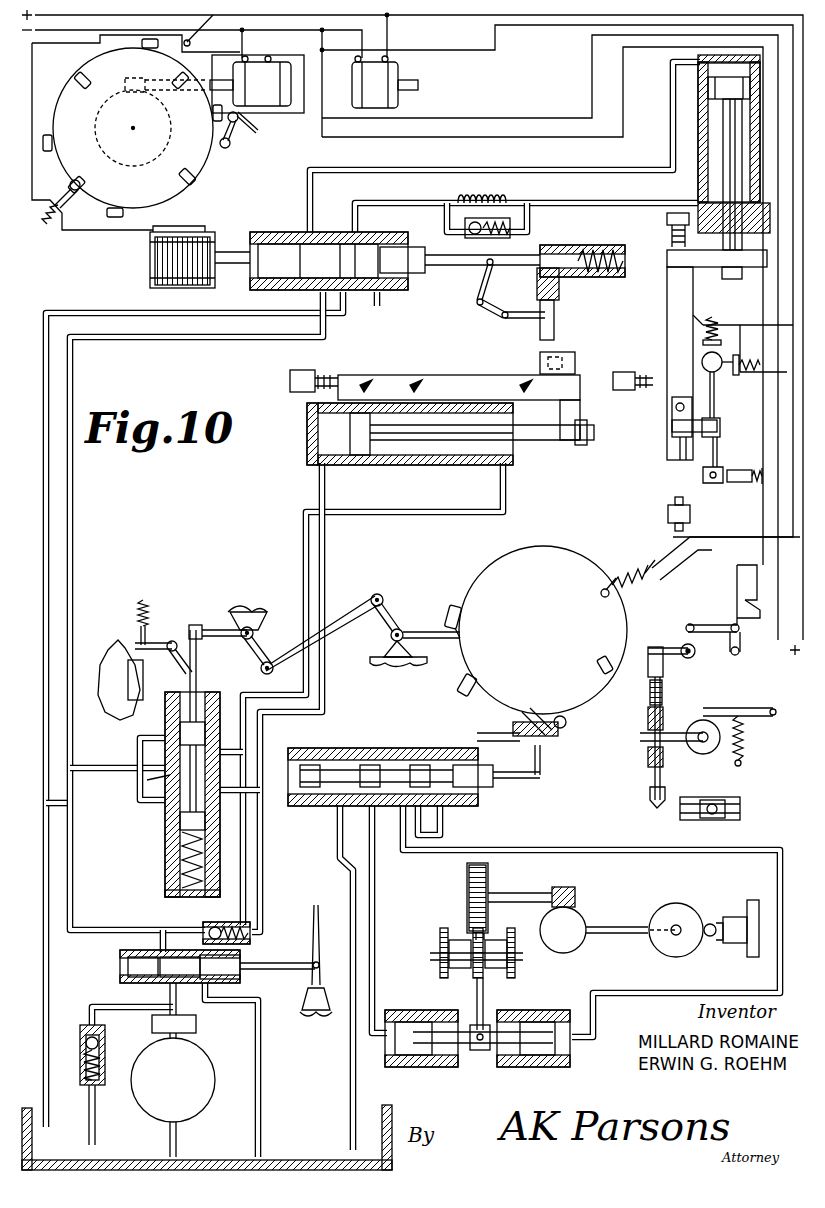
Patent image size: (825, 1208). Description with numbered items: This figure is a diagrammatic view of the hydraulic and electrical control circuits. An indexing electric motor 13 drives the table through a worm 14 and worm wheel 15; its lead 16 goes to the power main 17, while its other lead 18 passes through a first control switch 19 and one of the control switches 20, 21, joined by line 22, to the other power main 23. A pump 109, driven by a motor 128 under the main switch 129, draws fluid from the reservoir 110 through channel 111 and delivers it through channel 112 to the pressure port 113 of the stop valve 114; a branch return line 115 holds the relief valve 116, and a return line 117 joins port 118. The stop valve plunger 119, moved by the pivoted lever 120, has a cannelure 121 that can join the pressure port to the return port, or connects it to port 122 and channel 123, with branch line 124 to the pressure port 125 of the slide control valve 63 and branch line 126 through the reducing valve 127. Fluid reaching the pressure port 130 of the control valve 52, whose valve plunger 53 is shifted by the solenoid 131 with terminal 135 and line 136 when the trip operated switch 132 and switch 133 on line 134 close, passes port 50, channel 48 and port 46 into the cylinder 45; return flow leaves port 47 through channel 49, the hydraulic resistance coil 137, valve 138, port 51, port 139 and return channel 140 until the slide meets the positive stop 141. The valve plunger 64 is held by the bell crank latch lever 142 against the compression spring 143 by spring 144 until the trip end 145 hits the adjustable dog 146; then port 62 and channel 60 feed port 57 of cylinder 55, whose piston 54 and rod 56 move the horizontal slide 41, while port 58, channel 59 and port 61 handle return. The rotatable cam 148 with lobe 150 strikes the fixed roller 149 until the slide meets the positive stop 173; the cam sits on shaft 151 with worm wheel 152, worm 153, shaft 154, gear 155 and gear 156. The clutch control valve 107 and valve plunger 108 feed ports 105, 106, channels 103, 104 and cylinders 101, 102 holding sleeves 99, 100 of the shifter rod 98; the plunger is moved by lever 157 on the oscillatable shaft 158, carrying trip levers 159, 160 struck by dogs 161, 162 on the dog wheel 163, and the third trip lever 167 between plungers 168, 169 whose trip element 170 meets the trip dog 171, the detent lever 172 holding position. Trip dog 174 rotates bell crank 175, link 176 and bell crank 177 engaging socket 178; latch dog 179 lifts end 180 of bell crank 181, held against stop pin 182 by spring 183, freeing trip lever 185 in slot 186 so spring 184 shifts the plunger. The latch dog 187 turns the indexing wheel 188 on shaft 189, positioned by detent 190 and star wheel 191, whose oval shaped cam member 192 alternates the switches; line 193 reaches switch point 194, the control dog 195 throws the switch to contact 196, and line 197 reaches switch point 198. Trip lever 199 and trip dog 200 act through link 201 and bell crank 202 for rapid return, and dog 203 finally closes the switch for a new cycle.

The electric motor 13 is at (270, 56).
The worm 14 is at (130, 78).
The worm wheel 15 is at (108, 104).
The lead 16 is at (250, 56).
The power main 17 is at (136, 132).
The lead 18 is at (300, 82).
The first control switch 19 is at (233, 152).
The control switch 20 is at (703, 332).
The control switch 21 is at (722, 395).
The line 22 is at (748, 338).
The power main 23 is at (318, 20).
The horizontal slide 41 is at (418, 380).
The cylinder 45 is at (698, 148).
The port 46 is at (700, 68).
The port 47 is at (697, 200).
The channel 48 is at (580, 180).
The channel 49 is at (594, 206).
The port 50 is at (312, 232).
The port 51 is at (360, 232).
The control valve 52 is at (385, 300).
The valve plunger 53 is at (405, 275).
The piston 54 is at (356, 458).
The cylinder 55 is at (306, 435).
The rod 56 is at (548, 442).
The port 57 is at (318, 468).
The port 58 is at (498, 466).
The channel 59 is at (303, 546).
The channel 60 is at (326, 545).
The port 61 is at (222, 756).
The port 62 is at (222, 794).
The slide control valve 63 is at (222, 830).
The valve plunger 64 is at (200, 680).
The shifter rod 98 is at (488, 1010).
The sleeve 99 is at (440, 1067).
The sleeve 100 is at (480, 1067).
The cylinder 101 is at (400, 1067).
The cylinder 102 is at (536, 1067).
The channel 103 is at (376, 968).
The channel 104 is at (591, 921).
The port 105 is at (354, 977).
The port 106 is at (388, 919).
The clutch control valve 107 is at (455, 808).
The valve plunger 108 is at (480, 798).
The pump 109 is at (204, 1062).
The reservoir 110 is at (393, 1110).
The channel 111 is at (178, 1130).
The channel 112 is at (180, 1010).
The pressure port 113 is at (168, 985).
The stop valve 114 is at (120, 958).
The branch return line 115 is at (88, 1014).
The relief valve 116 is at (105, 1042).
The return line 117 is at (270, 990).
The port 118 is at (210, 992).
The stop valve plunger 119 is at (240, 960).
The pivoted lever 120 is at (312, 945).
The cannelure 121 is at (190, 950).
The port 122 is at (160, 945).
The channel 123 is at (73, 555).
The branch line 124 is at (80, 772).
The pressure port 125 is at (156, 787).
The branch line 126 is at (270, 883).
The reducing valve 127 is at (225, 922).
The electric motor 128 is at (376, 104).
The main switch 129 is at (200, 20).
The pressure port 130 is at (325, 298).
The electric solenoid 131 is at (175, 286).
The trip operated switch 132 is at (48, 228).
The switch 133 is at (622, 572).
The line 134 is at (672, 570).
The terminal 135 is at (179, 227).
The line 136 is at (303, 165).
The hydraulic resistance coil 137 is at (482, 190).
The valve 138 is at (463, 236).
The port 139 is at (361, 298).
The return channel 140 is at (46, 393).
The positive stop 141 is at (668, 514).
The bell crank latch lever 142 is at (178, 640).
The compression spring 143 is at (182, 852).
The spring 144 is at (138, 603).
The trip end 145 is at (143, 650).
The adjustable dog 146 is at (133, 700).
The rotatable cam 148 is at (672, 905).
The fixed roller 149 is at (712, 918).
The lobe 150 is at (705, 940).
The rotatable shaft 151 is at (616, 917).
The worm wheel 152 is at (578, 946).
The worm 153 is at (563, 887).
The shaft 154 is at (512, 884).
The gear 155 is at (466, 880).
The gear 156 is at (470, 928).
The lever 157 is at (542, 770).
The oscillatable shaft 158 is at (540, 720).
The trip lever 159 is at (520, 738).
The trip lever 160 is at (566, 728).
The dog 161 is at (520, 714).
The dog 162 is at (460, 690).
The dog wheel 163 is at (548, 548).
The third trip lever 167 is at (477, 737).
The plunger 168 is at (648, 716).
The plunger 169 is at (648, 755).
The trip element 170 is at (664, 795).
The trip dog 171 is at (730, 800).
The detent lever 172 is at (736, 708).
The positive stop 173 is at (648, 360).
The trip dog 174 is at (452, 602).
The bell crank 175 is at (402, 612).
The link 176 is at (345, 612).
The bell crank 177 is at (228, 630).
The socket 178 is at (190, 624).
The latch dog 179 is at (567, 359).
The end 180 is at (556, 335).
The bell crank 181 is at (490, 322).
The stop pin 182 is at (506, 308).
The spring 183 is at (560, 291).
The spring 184 is at (612, 244).
The trip lever 185 is at (493, 280).
The slot 186 is at (468, 280).
The latch dog 187 is at (672, 428).
The indexing wheel 188 is at (720, 428).
The horizontal shaft 189 is at (718, 459).
The spring pressed detent 190 is at (735, 483).
The star wheel 191 is at (710, 484).
The oval shaped cam member 192 is at (703, 362).
The line 193 is at (624, 100).
The switch point 194 is at (248, 135).
The control dog 195 is at (108, 213).
The contact 196 is at (255, 122).
The line 197 is at (520, 118).
The switch point 198 is at (742, 375).
The trip lever 199 is at (728, 602).
The trip dog 200 is at (737, 570).
The link 201 is at (710, 624).
The bell crank 202 is at (660, 648).
The dog 203 is at (604, 658).